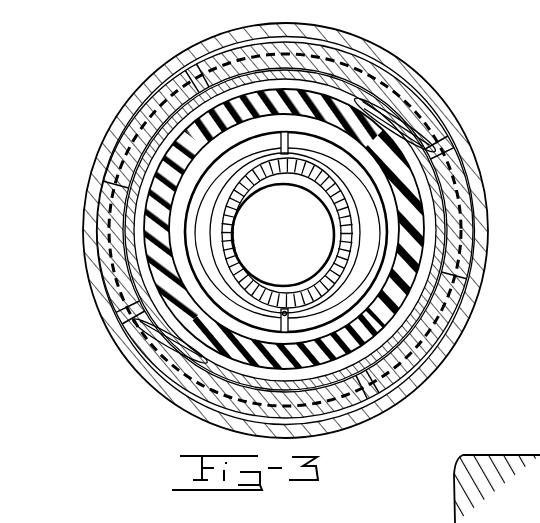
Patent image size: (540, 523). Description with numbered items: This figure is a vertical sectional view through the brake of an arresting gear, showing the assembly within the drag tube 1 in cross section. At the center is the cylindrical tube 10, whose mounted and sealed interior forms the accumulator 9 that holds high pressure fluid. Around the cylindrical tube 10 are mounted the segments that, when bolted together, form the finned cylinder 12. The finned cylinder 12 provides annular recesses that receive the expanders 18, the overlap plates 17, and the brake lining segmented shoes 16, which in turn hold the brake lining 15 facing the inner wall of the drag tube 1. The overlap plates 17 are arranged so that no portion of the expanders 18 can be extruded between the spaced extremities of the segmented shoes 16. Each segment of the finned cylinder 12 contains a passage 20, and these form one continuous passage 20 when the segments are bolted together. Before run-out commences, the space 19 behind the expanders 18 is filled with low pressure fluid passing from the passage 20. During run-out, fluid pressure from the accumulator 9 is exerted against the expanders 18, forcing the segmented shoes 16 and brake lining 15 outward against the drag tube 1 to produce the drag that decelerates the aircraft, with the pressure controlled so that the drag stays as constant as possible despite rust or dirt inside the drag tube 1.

The drag tube 1 is at (472, 300).
The accumulator 9 is at (274, 229).
The cylindrical tube 10 is at (302, 278).
The finned cylinder 12 is at (344, 148).
The brake lining 15 is at (440, 222).
The brake lining segmented shoes 16 is at (440, 207).
The overlap plates 17 is at (180, 117).
The expanders 18 is at (405, 181).
The space 19 is at (396, 238).
The passage 20 is at (375, 112).